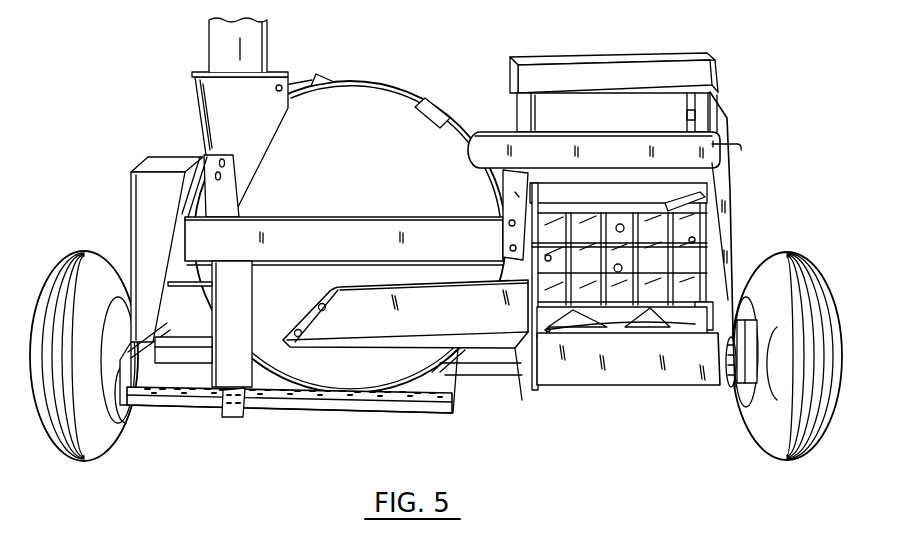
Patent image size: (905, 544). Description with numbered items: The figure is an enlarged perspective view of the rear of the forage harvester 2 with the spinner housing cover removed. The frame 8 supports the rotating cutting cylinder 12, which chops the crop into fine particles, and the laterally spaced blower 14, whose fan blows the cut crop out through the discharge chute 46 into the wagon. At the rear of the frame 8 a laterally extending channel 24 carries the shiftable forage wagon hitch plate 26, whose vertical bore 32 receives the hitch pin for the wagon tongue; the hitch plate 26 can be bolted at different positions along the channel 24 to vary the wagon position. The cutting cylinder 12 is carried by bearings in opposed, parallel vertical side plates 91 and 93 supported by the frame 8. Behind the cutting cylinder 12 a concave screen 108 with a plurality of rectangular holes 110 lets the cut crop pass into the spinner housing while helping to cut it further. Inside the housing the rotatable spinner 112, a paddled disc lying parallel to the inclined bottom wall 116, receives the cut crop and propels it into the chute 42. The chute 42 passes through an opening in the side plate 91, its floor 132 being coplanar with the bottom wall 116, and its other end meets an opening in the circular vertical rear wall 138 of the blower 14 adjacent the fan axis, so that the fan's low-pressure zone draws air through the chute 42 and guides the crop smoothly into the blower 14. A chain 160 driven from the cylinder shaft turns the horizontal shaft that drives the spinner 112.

The forage harvester 2 is at (135, 150).
The frame 8 is at (182, 345).
The cutting cylinder 12 is at (708, 227).
The blower 14 is at (387, 76).
The channel 24 is at (368, 397).
The forage wagon hitch plate 26 is at (226, 404).
The vertical bore 32 is at (236, 414).
The chute 42 is at (445, 331).
The discharge chute 46 is at (267, 42).
The side plate 91 is at (497, 196).
The side plate 93 is at (730, 247).
The concave screen 108 is at (700, 208).
The rectangular holes 110 is at (593, 223).
The rotatable spinner 112 is at (622, 332).
The inclined bottom wall 116 is at (684, 332).
The chute floor 132 is at (427, 343).
The circular vertical rear wall 138 is at (364, 128).
The chain 160 is at (733, 388).